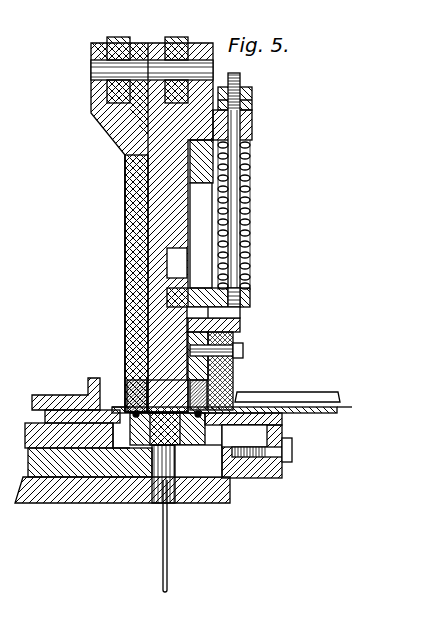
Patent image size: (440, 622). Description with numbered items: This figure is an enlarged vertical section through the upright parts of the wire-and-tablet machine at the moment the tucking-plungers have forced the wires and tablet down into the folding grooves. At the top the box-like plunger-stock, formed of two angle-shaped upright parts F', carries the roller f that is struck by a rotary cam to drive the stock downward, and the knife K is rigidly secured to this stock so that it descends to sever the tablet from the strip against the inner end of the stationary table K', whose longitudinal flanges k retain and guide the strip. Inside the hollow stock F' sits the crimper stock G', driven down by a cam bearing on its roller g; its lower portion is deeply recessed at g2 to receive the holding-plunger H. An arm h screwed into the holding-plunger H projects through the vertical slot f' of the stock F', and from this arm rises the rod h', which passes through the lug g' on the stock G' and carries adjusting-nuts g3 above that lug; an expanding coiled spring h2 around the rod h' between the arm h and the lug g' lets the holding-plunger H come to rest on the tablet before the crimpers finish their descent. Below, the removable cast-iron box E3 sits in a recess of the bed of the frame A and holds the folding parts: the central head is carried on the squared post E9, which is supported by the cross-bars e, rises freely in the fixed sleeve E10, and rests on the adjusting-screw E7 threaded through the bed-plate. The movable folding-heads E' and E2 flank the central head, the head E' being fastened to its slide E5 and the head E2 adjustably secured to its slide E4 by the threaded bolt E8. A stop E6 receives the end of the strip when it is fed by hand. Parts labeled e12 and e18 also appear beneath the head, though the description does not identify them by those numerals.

The roller f is at (115, 58).
The roller g is at (220, 77).
The adjusting-nuts g3 is at (244, 98).
The rod h' is at (246, 215).
The expanding coiled spring h2 is at (250, 211).
The arm h is at (218, 297).
The movable folding-head E' is at (123, 283).
The stock G' is at (152, 227).
The angle-shaped upright parts F' is at (213, 260).
The vertical slot f' is at (169, 297).
The recess g2 is at (177, 263).
The lug g' is at (119, 397).
The holding-plunger H is at (167, 396).
The knife K is at (227, 371).
The stationary table K' is at (224, 385).
The longitudinal flanges k is at (287, 389).
The frame A is at (350, 403).
The stop E6 is at (66, 394).
The movable folding-head E2 is at (163, 418).
The slide E5 is at (77, 435).
The slide E4 is at (90, 462).
The cast-iron box E3 is at (122, 498).
The post E9 is at (167, 429).
The cross-bars e is at (167, 424).
The recess e12 is at (198, 461).
The fixed sleeve E10 is at (177, 503).
The needle e18 is at (176, 536).
The adjusting-screw E7 is at (252, 451).
The threaded bolt E8 is at (271, 450).